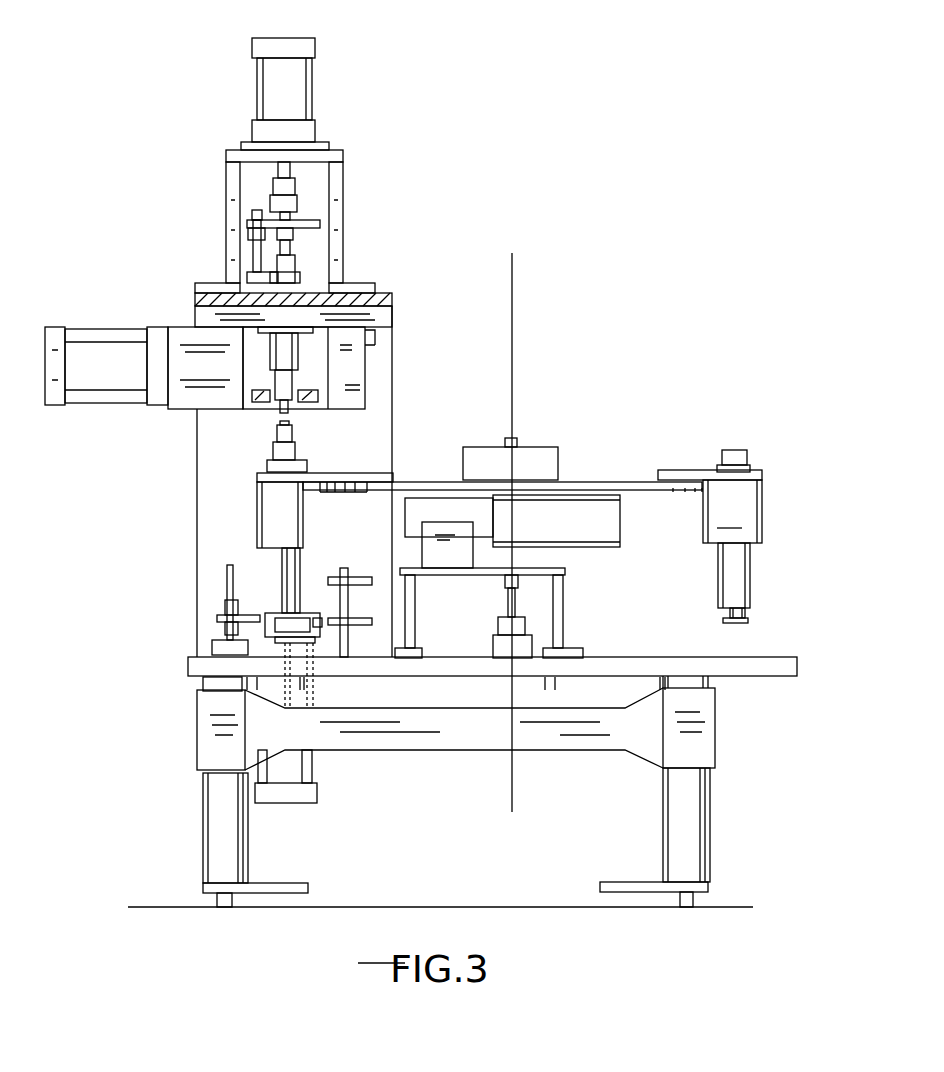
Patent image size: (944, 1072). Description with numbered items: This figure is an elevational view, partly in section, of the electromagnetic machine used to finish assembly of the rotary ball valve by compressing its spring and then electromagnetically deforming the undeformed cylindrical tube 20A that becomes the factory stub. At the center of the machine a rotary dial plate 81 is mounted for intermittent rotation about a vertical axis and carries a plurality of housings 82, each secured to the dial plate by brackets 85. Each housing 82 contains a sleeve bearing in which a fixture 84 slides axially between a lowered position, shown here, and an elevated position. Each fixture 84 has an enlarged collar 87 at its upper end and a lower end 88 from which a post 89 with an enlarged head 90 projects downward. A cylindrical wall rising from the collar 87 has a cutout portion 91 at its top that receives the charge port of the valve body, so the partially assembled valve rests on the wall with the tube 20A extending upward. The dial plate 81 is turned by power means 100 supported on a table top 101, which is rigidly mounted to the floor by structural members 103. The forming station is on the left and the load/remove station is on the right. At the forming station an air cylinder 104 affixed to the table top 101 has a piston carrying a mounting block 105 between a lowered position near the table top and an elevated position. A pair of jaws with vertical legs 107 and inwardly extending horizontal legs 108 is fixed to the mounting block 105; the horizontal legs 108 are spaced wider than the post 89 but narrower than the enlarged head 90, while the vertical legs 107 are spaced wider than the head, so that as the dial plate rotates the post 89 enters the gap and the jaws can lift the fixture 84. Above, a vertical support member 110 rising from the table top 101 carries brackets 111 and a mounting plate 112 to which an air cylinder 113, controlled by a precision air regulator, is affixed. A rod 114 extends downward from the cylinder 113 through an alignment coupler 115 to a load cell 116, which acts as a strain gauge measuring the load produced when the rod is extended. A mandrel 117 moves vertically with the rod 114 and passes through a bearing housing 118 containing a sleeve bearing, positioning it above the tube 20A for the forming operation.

The cylindrical tube 20A is at (277, 428).
The rotary dial plate 81 is at (588, 485).
The housing 82 is at (278, 510).
The fixture 84 is at (296, 560).
The bracket 85 is at (330, 453).
The enlarged collar 87 is at (265, 468).
The lower end 88 is at (270, 615).
The post 89 is at (282, 618).
The enlarged head 90 is at (290, 640).
The cutout portion 91 is at (273, 450).
The power means 100 is at (590, 555).
The table top 101 is at (750, 668).
The structural member 103 is at (233, 828).
The air cylinder 104 is at (312, 772).
The mounting block 105 is at (223, 667).
The vertical leg 107 is at (213, 643).
The horizontal leg 108 is at (265, 620).
The vertical support member 110 is at (380, 370).
The bracket 111 is at (233, 243).
The mounting plate 112 is at (337, 158).
The air cylinder 113 is at (315, 73).
The rod 114 is at (277, 173).
The alignment coupler 115 is at (297, 202).
The load cell 116 is at (288, 246).
The mandrel 117 is at (290, 413).
The bearing housing 118 is at (293, 381).